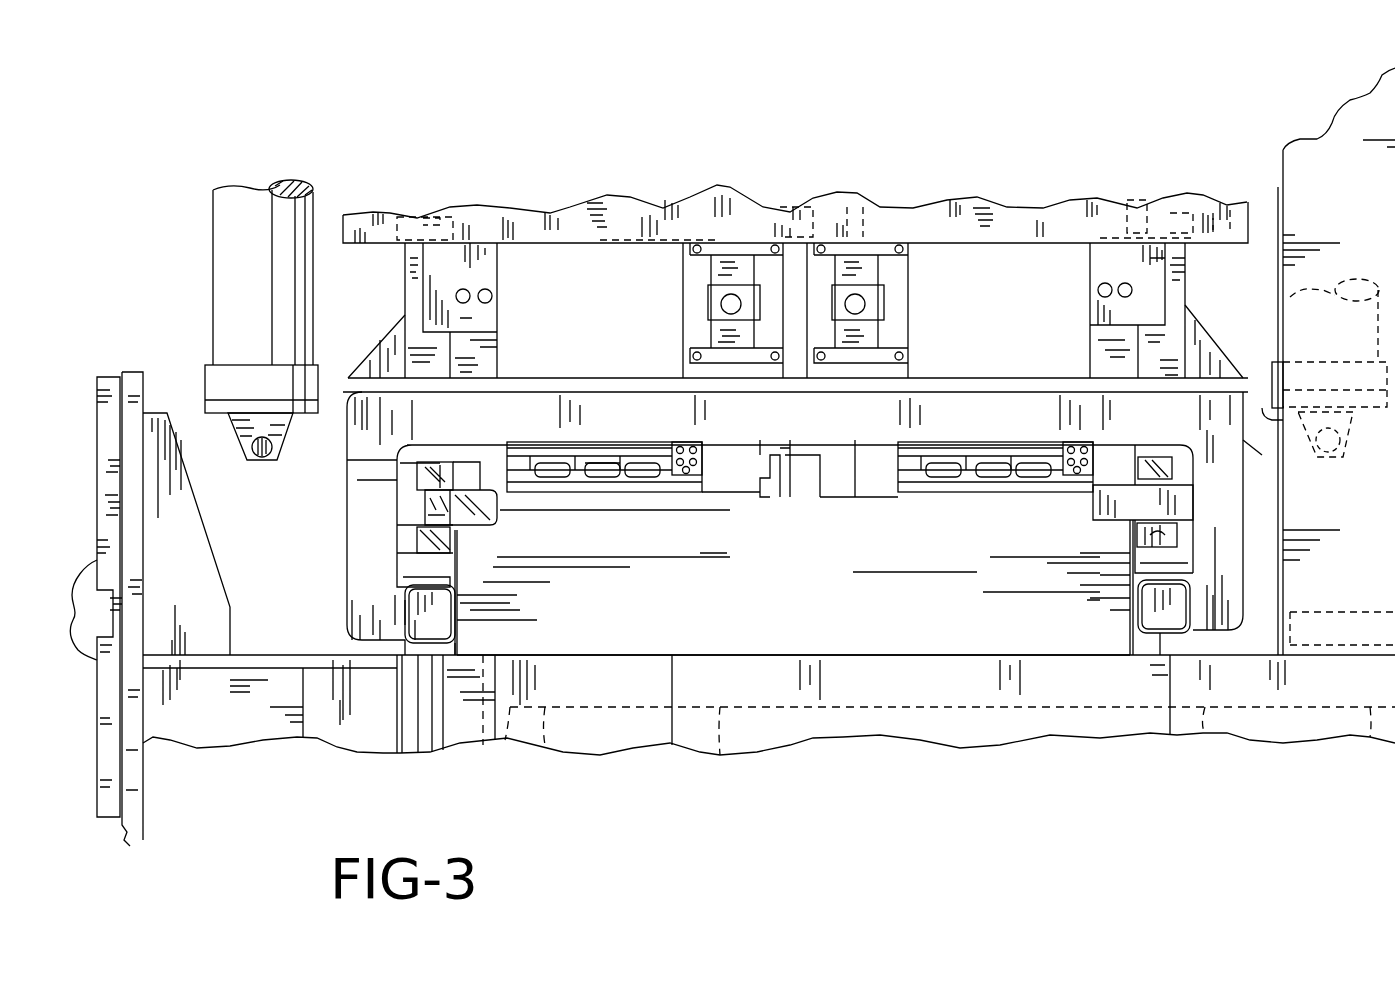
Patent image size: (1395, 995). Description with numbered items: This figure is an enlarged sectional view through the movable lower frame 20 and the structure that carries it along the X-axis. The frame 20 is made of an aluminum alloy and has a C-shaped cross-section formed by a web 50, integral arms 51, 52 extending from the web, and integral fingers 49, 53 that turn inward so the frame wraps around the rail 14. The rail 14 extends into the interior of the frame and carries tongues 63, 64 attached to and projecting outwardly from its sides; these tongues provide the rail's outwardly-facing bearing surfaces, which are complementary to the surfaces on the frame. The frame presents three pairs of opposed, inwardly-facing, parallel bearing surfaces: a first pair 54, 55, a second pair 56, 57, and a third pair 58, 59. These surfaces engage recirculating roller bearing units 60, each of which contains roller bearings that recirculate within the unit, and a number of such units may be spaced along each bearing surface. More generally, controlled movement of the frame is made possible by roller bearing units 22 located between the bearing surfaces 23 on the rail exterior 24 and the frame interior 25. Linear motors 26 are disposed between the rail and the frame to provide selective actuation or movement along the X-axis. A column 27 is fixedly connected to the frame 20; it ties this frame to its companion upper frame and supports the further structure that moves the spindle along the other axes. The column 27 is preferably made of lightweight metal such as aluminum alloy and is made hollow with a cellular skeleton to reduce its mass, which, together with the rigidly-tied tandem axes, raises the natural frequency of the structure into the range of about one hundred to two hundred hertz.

The rail 14 is at (852, 628).
The movable lower frame 20 is at (347, 569).
The roller bearing units 22 is at (433, 503).
The bearing surfaces 23 is at (450, 490).
The rail exterior 24 is at (733, 496).
The frame interior 25 is at (868, 442).
The linear motors 26 is at (948, 452).
The column 27 is at (392, 290).
The integral finger 49 is at (402, 640).
The web 50 is at (816, 412).
The integral arm 51 is at (375, 524).
The integral arm 52 is at (1230, 530).
The integral finger 53 is at (1175, 613).
The bearing surface 54 is at (433, 460).
The bearing surface 55 is at (457, 528).
The bearing surface 56 is at (1140, 462).
The bearing surface 57 is at (1130, 537).
The bearing surface 58 is at (395, 492).
The bearing surface 59 is at (1195, 527).
The recirculating roller bearing units 60 is at (428, 548).
The tongue 63 is at (648, 470).
The tongue 64 is at (1218, 458).